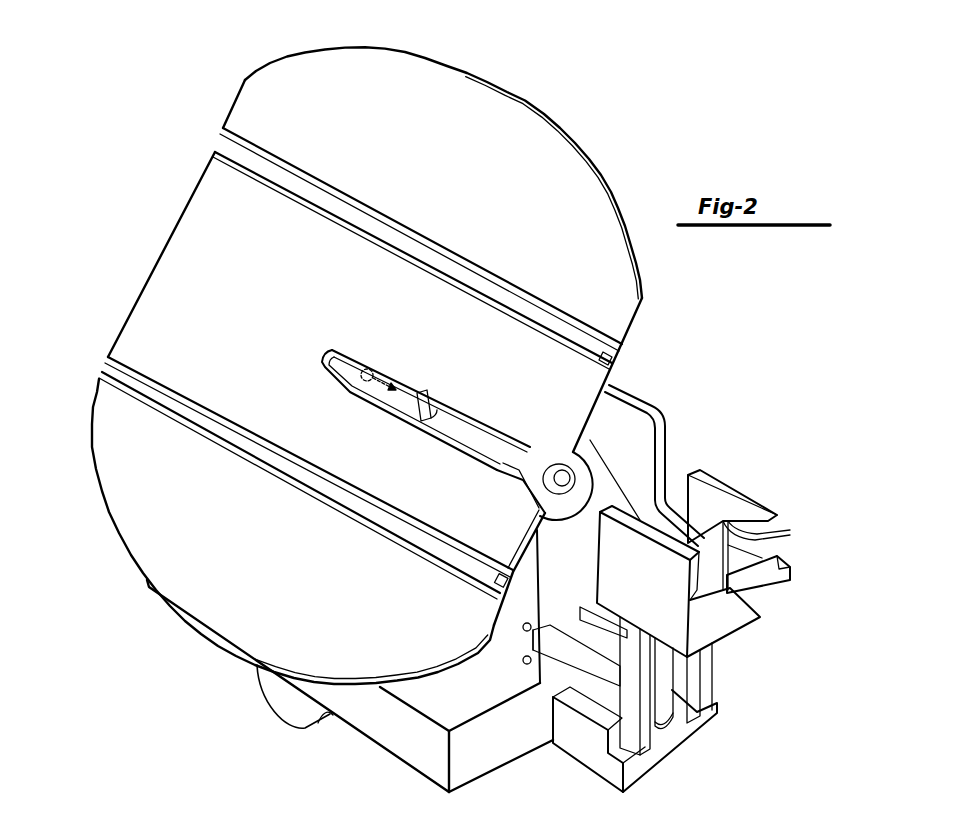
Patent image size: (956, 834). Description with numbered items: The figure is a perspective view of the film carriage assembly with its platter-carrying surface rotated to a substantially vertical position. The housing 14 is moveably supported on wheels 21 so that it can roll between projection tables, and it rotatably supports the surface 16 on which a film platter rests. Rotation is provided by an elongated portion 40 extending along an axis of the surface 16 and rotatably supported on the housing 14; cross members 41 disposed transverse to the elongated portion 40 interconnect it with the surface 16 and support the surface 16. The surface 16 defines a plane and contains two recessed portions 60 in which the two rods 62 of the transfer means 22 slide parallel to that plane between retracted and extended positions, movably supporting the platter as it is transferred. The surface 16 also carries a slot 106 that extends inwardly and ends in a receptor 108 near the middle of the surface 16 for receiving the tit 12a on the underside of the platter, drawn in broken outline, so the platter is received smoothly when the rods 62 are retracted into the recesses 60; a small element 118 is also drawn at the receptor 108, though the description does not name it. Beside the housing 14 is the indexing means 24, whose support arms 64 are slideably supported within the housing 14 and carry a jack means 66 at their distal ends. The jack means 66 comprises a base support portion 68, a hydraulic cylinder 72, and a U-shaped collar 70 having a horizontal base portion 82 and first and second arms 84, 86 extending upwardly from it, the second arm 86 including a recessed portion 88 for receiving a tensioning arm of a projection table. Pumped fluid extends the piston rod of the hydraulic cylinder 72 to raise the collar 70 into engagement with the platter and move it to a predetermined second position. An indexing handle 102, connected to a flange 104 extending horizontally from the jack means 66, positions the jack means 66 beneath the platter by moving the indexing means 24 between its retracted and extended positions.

The surface 16 is at (422, 56).
The transfer means 22 is at (215, 135).
The rods 62 is at (348, 198).
The recessed portions 60 is at (247, 173).
The receptor 108 is at (328, 347).
The pin 118 is at (348, 355).
The tit 12a is at (376, 367).
The cross members 41 is at (437, 412).
The slot 106 is at (522, 441).
The indexing handle 102 is at (617, 388).
The elongated portion 40 is at (585, 472).
The second arm 86 is at (697, 473).
The recessed portion 88 is at (790, 534).
The flange 104 is at (792, 572).
The first arm 84 is at (689, 604).
The U-shaped collar 70 is at (748, 627).
The support arms 64 is at (583, 617).
The horizontal base portion 82 is at (705, 655).
The indexing means 24 is at (765, 681).
The hydraulic cylinder 72 is at (667, 717).
The jack means 66 is at (652, 768).
The base support portion 68 is at (581, 763).
The wheels 21 is at (272, 712).
The housing 14 is at (373, 727).